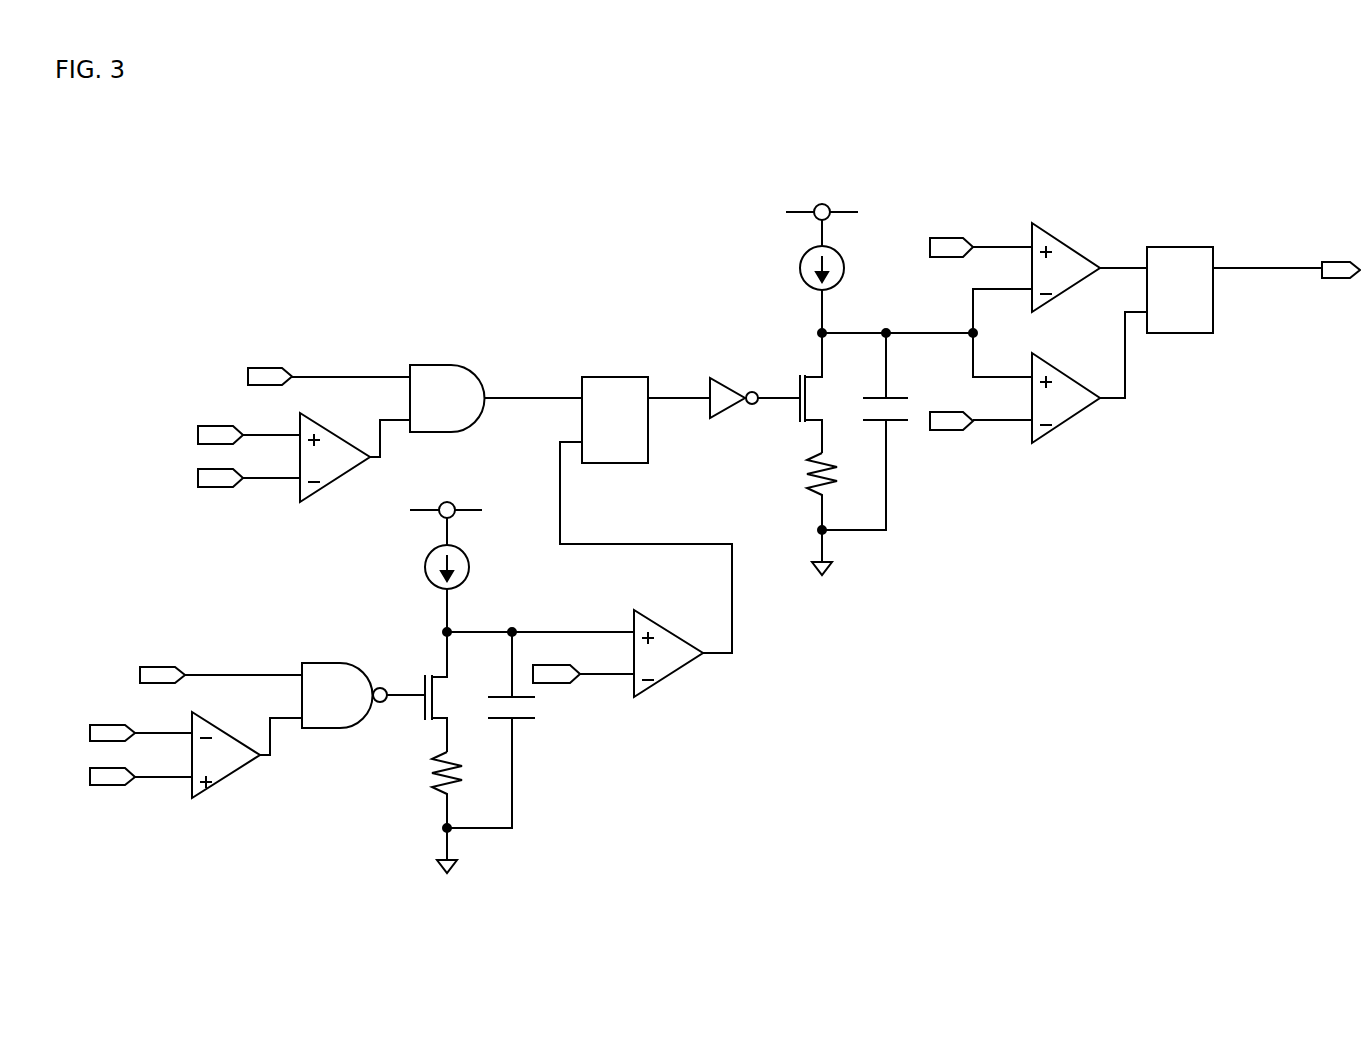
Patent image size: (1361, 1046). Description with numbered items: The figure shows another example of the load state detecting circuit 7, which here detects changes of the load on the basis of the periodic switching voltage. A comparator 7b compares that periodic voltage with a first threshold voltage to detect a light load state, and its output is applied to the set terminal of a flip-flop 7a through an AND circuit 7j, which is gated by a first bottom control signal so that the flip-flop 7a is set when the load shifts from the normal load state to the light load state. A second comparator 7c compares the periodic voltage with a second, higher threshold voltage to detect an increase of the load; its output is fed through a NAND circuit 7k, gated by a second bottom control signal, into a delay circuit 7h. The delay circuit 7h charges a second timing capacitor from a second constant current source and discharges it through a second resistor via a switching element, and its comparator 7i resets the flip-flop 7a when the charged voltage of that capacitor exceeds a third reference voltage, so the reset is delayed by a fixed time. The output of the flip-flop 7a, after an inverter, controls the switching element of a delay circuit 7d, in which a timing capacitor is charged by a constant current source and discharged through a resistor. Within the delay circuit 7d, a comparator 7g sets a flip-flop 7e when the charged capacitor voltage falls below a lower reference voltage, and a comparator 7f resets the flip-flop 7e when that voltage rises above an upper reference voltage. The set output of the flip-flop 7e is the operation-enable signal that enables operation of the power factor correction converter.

The load state detecting circuit 7 is at (618, 278).
The flip-flop 7a is at (604, 377).
The comparator (light load detecting circuit) 7b is at (346, 433).
The comparator (normal load detecting circuit) 7c is at (233, 735).
The delay circuit 7d is at (897, 452).
The flip-flop 7e is at (1181, 247).
The comparator 7f is at (1070, 421).
The comparator 7g is at (1058, 238).
The delay circuit 7h is at (562, 749).
The comparator 7i is at (676, 676).
The AND circuit 7j is at (446, 365).
The NAND circuit 7k is at (335, 727).